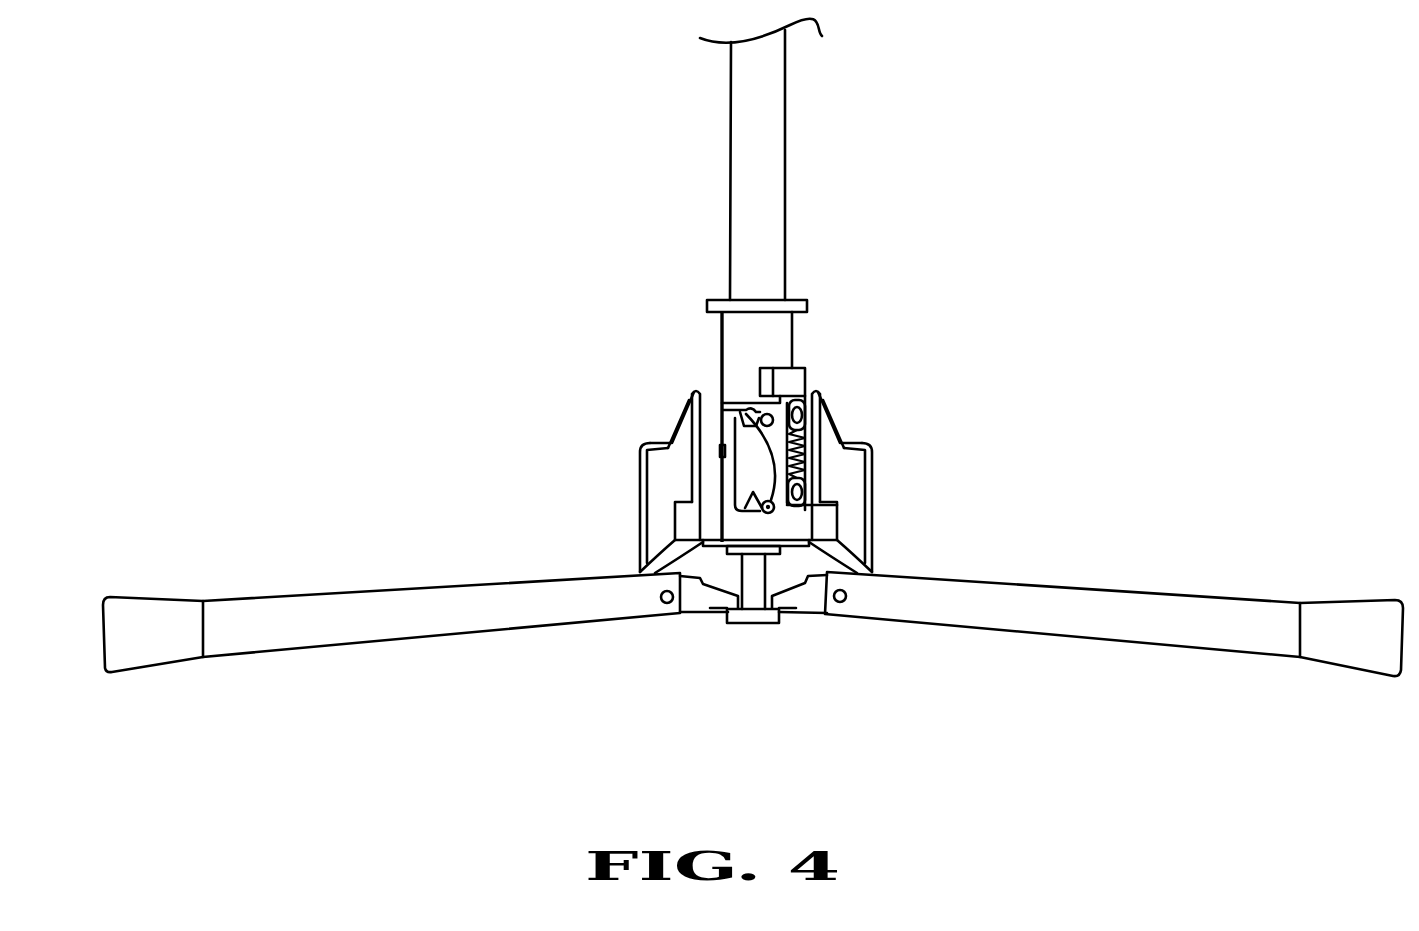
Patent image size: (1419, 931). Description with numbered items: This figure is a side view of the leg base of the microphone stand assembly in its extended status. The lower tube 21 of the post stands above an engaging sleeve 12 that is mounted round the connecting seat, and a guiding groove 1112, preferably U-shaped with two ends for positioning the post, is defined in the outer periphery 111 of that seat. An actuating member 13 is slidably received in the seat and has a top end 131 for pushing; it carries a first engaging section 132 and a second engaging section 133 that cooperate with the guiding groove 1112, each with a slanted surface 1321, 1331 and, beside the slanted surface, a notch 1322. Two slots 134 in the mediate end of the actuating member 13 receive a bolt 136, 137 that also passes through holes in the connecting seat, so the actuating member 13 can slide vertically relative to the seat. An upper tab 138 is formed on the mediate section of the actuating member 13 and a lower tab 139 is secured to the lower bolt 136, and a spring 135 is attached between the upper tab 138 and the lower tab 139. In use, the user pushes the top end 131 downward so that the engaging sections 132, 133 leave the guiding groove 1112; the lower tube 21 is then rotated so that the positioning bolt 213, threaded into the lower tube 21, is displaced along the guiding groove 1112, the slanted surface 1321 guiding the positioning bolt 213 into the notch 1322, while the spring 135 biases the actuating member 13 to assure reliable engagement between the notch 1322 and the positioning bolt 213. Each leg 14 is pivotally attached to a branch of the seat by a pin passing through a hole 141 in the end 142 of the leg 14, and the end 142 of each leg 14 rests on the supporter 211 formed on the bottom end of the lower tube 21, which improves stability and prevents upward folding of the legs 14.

The lower tube 21 is at (788, 190).
The outer periphery 111 is at (780, 330).
The guiding groove 1112 is at (723, 452).
The top end 131 is at (806, 380).
The second engaging section 133 is at (758, 412).
The slanted surface 1331 is at (745, 410).
The actuating member 13 is at (712, 430).
The engaging sleeve 12 is at (872, 477).
The first engaging section 132 is at (758, 510).
The slanted surface 1321 is at (748, 503).
The notch 1322 is at (776, 510).
The slot 134 is at (805, 404).
The spring 135 is at (795, 450).
The bolt 136 is at (796, 504).
The bolt 137 is at (807, 418).
The upper tab 138 is at (806, 428).
The lower tab 139 is at (806, 478).
The leg 14 is at (1112, 627).
The hole 141 is at (841, 604).
The end 142 is at (799, 604).
The supporter 211 is at (750, 613).
The positioning bolt 213 is at (773, 512).